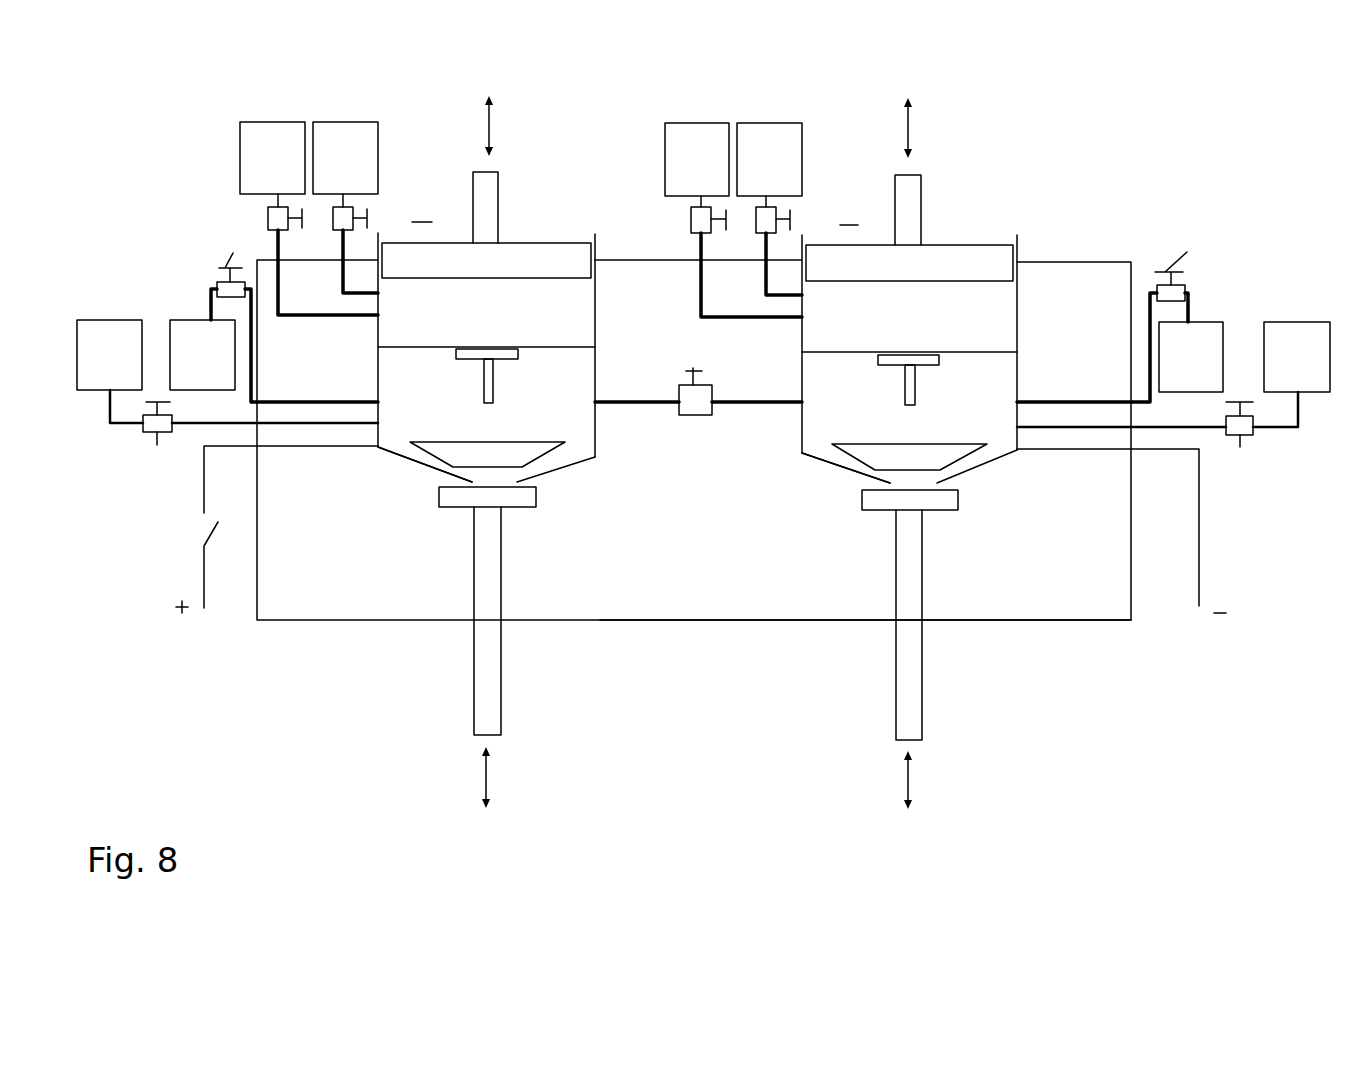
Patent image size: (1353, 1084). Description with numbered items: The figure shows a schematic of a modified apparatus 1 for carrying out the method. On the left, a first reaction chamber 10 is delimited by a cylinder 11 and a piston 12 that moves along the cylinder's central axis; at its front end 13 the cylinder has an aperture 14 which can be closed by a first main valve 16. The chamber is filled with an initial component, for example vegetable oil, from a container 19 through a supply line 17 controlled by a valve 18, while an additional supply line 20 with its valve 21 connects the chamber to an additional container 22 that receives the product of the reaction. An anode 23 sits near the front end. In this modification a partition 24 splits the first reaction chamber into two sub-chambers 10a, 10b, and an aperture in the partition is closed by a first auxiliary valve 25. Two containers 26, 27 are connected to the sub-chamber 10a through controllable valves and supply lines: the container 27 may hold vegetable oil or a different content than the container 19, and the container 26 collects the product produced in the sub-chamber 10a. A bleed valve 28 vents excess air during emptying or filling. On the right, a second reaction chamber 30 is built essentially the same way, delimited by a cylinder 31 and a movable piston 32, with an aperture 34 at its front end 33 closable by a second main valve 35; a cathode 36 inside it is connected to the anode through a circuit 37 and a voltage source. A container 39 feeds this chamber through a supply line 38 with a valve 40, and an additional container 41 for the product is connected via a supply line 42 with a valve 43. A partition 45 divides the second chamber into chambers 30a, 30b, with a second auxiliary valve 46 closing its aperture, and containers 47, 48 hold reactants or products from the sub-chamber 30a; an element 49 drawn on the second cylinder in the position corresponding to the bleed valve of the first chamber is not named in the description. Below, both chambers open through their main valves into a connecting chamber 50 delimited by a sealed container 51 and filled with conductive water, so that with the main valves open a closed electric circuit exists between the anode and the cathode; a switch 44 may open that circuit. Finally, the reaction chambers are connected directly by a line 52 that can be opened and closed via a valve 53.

The apparatus 1 is at (256, 700).
The first reaction chamber 10 is at (514, 452).
The sub-chamber 10a is at (487, 320).
The sub-chamber 10b is at (457, 424).
The cylinder 11 is at (597, 283).
The piston 12 is at (560, 248).
The front end 13 is at (570, 463).
The aperture 14 is at (472, 483).
The first main valve 16 is at (502, 713).
The supply line 17 is at (122, 425).
The valve 18 is at (260, 441).
The container 19 is at (126, 376).
The additional supply line 20 is at (207, 307).
The valve 21 is at (231, 260).
The additional container 22 is at (219, 376).
The anode 23 is at (597, 446).
The partition 24 is at (547, 345).
The first auxiliary valve 25 is at (493, 370).
The container 26 is at (362, 172).
The container 27 is at (290, 172).
The bleed valve 28 is at (420, 243).
The second reaction chamber 30 is at (909, 453).
The sub-chamber 30a is at (888, 325).
The sub-chamber 30b is at (888, 420).
The cylinder 31 is at (1019, 288).
The piston 32 is at (975, 249).
The front end 33 is at (988, 470).
The aperture 34 is at (870, 480).
The second main valve 35 is at (923, 707).
The cathode 36 is at (802, 452).
The circuit 37 is at (1199, 530).
The supply line 38 is at (1282, 432).
The container 39 is at (1313, 378).
The valve 40 is at (1240, 447).
The additional container 41 is at (1207, 378).
The supply line 42 is at (1194, 305).
The valve 43 is at (1190, 261).
The switch 44 is at (204, 547).
The partition 45 is at (988, 352).
The second auxiliary valve 46 is at (917, 377).
The container 47 is at (714, 176).
The container 48 is at (786, 176).
The vent / connection 49 is at (849, 245).
The connecting chamber 50 is at (716, 604).
The sealed container 51 is at (1082, 620).
The line 52 is at (750, 397).
The valve 53 is at (693, 368).